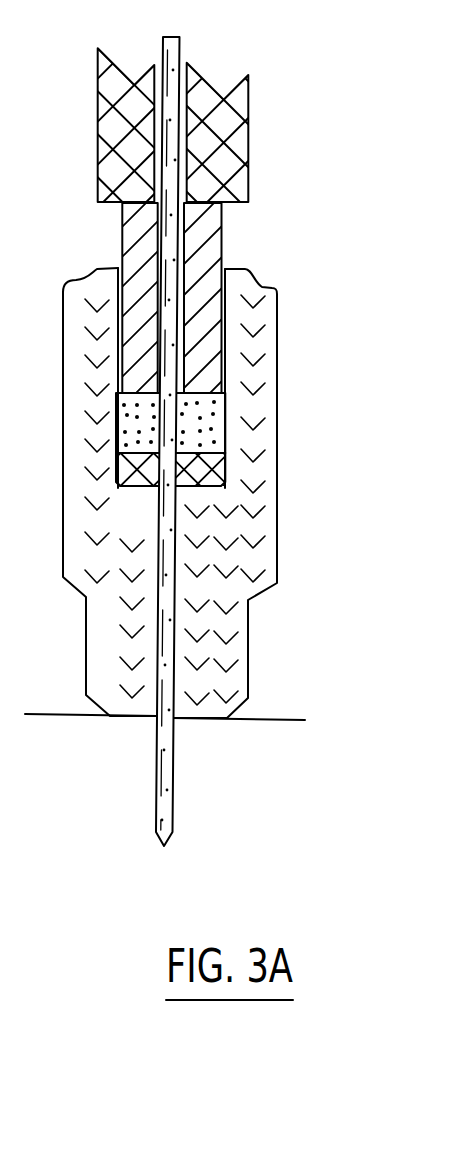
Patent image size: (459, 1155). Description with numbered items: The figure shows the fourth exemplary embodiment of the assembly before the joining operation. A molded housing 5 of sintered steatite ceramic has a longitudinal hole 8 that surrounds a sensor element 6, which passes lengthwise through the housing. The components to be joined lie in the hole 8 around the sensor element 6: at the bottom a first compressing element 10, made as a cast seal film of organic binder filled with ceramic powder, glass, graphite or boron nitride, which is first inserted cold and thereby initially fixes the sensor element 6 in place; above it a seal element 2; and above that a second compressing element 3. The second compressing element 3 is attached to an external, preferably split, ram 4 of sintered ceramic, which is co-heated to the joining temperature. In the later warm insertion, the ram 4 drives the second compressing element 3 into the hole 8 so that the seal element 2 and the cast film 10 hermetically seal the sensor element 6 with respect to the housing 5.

The seal element 2 is at (217, 428).
The second compressing element 3 is at (212, 337).
The ram 4 is at (249, 133).
The molded housing 5 is at (248, 645).
The sensor element 6 is at (172, 777).
The hole 8 is at (225, 298).
The first compressing element 10 is at (220, 477).